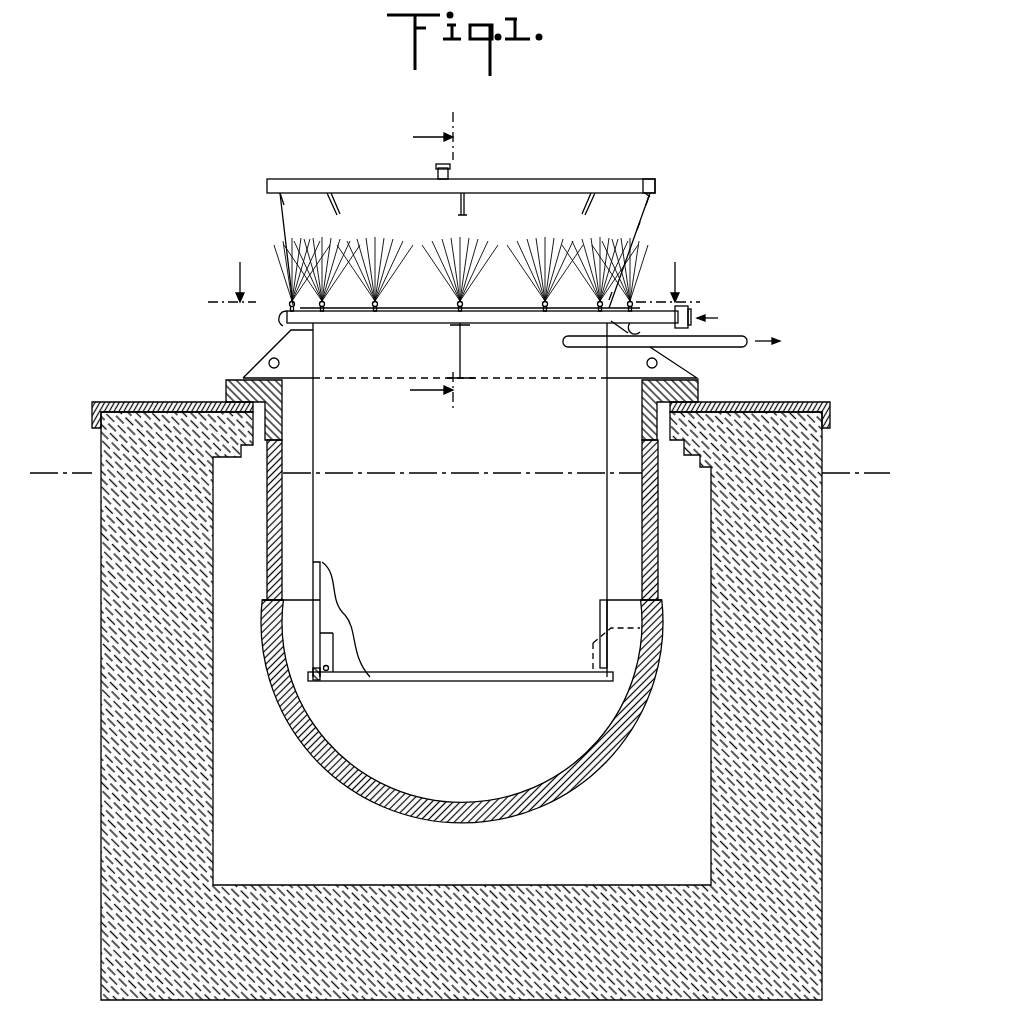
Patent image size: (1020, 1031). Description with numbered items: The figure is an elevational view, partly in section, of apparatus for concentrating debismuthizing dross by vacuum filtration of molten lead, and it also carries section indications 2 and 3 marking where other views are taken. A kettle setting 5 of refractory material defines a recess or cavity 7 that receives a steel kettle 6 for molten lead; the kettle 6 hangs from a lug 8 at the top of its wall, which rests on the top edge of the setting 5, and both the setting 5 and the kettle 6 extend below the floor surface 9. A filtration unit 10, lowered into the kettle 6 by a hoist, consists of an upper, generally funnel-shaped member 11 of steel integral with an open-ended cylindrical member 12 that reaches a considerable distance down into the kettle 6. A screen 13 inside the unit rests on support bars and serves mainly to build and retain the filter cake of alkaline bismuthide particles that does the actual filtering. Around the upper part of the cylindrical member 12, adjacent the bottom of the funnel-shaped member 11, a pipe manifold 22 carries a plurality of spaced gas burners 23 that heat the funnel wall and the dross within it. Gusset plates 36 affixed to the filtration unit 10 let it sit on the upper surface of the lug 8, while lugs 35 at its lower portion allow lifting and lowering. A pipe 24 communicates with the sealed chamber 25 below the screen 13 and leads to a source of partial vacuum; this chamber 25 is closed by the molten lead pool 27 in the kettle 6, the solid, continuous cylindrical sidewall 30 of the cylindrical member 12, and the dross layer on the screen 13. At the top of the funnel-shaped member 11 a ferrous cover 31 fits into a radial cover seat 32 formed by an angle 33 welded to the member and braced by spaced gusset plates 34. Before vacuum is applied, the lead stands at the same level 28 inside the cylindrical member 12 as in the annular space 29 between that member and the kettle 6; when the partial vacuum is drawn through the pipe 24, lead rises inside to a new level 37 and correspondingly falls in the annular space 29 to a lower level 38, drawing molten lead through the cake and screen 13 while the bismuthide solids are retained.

The section line 2- 2 is at (454, 282).
The section line 3- 3 is at (431, 269).
The kettle setting 5 is at (792, 574).
The kettle 6 is at (660, 531).
The recess or cavity 7 is at (592, 843).
The lug 8 is at (700, 386).
The floor surface 9 is at (843, 473).
The filtration unit 10 is at (612, 292).
The funnel-shaped member 11 is at (637, 229).
The cylindrical member 12 is at (609, 419).
The screen 13 is at (345, 300).
The pipe manifold 22 is at (568, 318).
The gas burners 23 is at (290, 310).
The pipe 24 is at (664, 312).
The sealed chamber 25 is at (598, 365).
The bath of molten lead 27 is at (337, 617).
The level 28 is at (445, 473).
The annular space 29 is at (292, 546).
The cylindrical sidewall 30 is at (238, 410).
The cover 31 is at (517, 180).
The cover seat 32 is at (643, 180).
The angle 33 is at (655, 186).
The gusset plates 34 is at (280, 197).
The lugs 35 is at (322, 651).
The gusset plates 36 is at (283, 348).
The level 37 is at (367, 378).
The level 38 is at (298, 598).